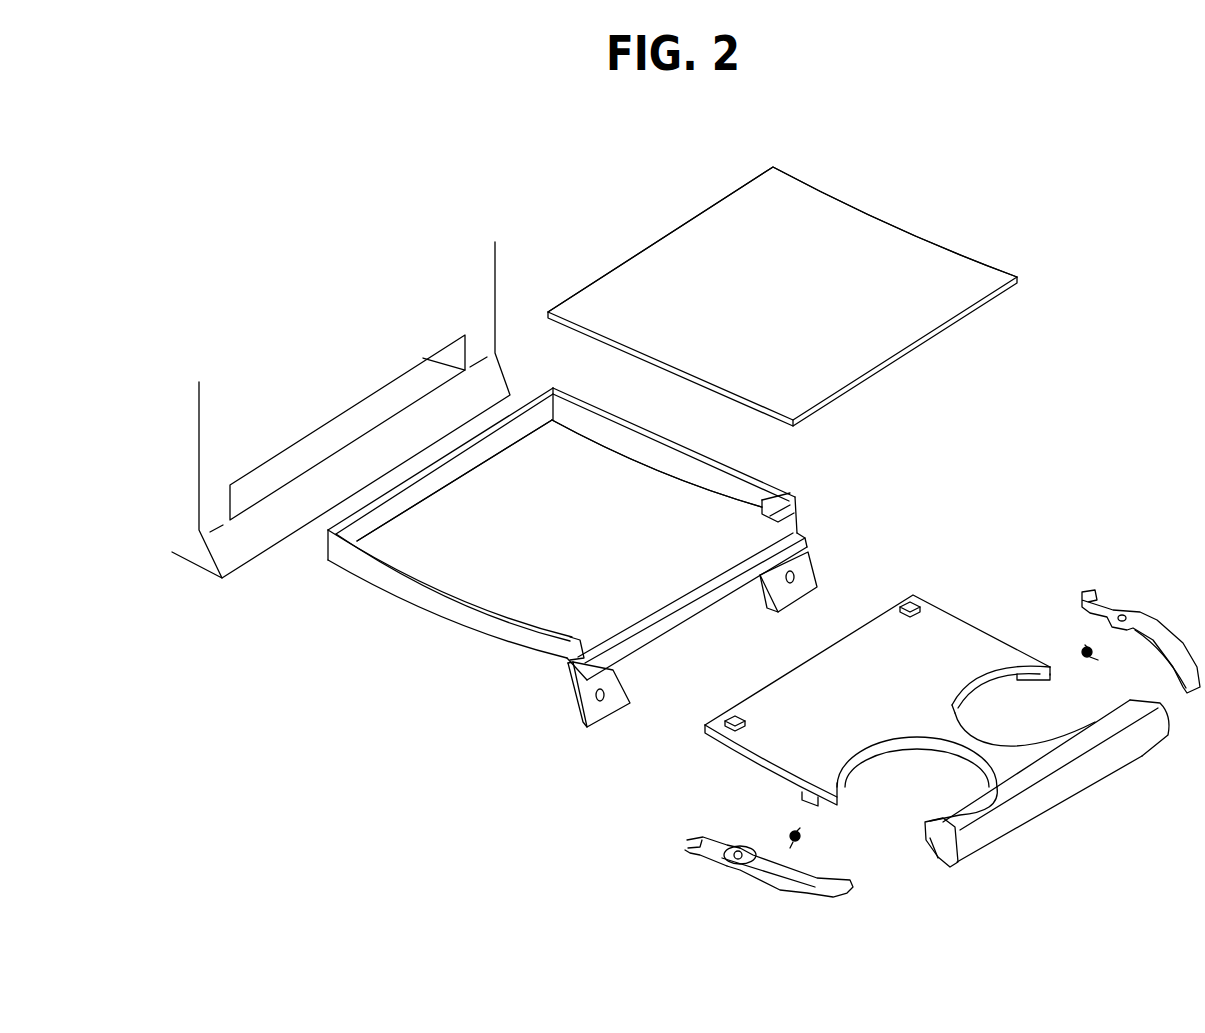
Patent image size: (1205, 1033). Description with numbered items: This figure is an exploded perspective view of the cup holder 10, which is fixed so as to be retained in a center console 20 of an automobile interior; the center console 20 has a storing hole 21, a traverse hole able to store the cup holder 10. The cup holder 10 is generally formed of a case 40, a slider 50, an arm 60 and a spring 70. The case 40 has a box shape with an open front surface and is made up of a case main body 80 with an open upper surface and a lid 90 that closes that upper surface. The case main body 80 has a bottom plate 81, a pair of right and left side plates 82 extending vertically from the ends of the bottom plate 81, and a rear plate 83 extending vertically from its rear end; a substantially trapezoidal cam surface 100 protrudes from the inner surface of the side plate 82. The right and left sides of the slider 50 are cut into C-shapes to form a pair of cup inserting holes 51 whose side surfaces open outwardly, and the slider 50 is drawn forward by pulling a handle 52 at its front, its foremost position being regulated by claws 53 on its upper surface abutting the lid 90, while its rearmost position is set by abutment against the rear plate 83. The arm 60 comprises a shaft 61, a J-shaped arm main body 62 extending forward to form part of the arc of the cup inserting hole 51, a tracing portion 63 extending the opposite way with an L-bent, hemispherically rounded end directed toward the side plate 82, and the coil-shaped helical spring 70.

The cup holder 10 is at (502, 163).
The center console 20 is at (478, 293).
The storing hole 21 is at (242, 495).
The case 40 is at (681, 209).
The lid 90 is at (890, 335).
The case main body 80 is at (544, 570).
The bottom plate 81 is at (527, 597).
The side plate 82 is at (692, 458).
The rear plate 83 is at (382, 512).
The cam surface 100 is at (792, 516).
The slider 50 is at (954, 695).
The cup inserting hole 51 is at (1065, 722).
The handle 52 is at (1057, 792).
The claw 53 is at (910, 604).
The arm 60 is at (875, 731).
The shaft 61 is at (725, 862).
The arm main body 62 is at (790, 893).
The tracing portion 63 is at (688, 845).
The spring 70 is at (1080, 644).